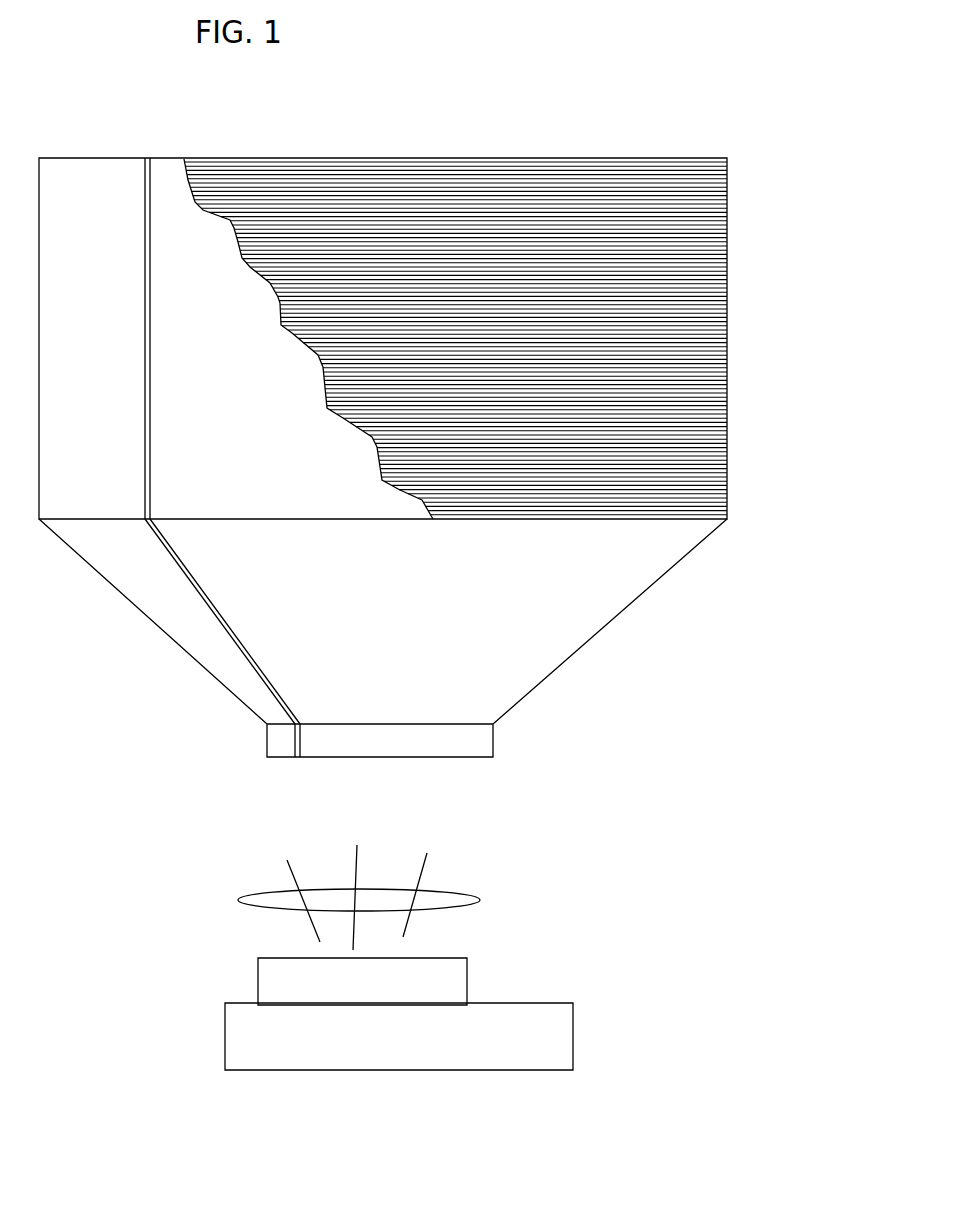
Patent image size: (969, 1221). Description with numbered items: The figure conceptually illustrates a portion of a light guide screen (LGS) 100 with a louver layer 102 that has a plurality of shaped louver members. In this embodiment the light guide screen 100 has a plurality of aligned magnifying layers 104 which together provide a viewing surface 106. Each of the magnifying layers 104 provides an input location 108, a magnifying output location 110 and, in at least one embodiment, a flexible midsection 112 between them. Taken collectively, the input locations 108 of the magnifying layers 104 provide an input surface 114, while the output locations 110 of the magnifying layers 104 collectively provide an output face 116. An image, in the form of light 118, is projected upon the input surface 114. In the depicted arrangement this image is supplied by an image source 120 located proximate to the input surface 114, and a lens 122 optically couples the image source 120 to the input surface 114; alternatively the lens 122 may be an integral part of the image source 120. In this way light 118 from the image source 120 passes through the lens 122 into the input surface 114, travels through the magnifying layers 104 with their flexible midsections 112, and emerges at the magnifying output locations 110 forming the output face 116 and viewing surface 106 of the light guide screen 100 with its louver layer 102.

The light guide screen 100 is at (644, 112).
The louver layer 102 is at (693, 403).
The magnifying layers 104 is at (157, 165).
The viewing surface 106 is at (714, 228).
The input location 108 is at (296, 761).
The magnifying output location 110 is at (139, 163).
The flexible midsection 112 is at (228, 623).
The input surface 114 is at (493, 762).
The output face 116 is at (727, 157).
The light 118 is at (427, 866).
The image source 120 is at (437, 983).
The lens 122 is at (460, 907).